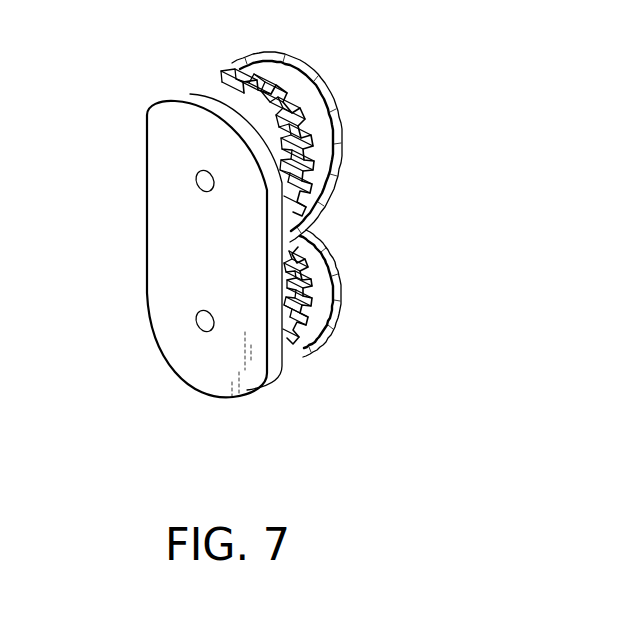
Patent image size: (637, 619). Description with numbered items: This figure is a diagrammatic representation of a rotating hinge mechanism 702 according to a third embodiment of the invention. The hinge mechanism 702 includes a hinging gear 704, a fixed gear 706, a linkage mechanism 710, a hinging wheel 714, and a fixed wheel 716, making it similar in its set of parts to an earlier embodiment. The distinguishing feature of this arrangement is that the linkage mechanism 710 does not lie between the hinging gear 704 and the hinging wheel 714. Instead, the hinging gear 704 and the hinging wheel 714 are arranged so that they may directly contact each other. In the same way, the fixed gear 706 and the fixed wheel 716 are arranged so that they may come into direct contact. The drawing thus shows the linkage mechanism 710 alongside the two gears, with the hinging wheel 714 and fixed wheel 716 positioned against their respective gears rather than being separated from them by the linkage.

The hinge mechanism 702 is at (286, 228).
The hinging gear 704 is at (262, 145).
The fixed gear 706 is at (354, 326).
The linkage mechanism 710 is at (167, 265).
The hinging wheel 714 is at (338, 180).
The fixed wheel 716 is at (330, 330).